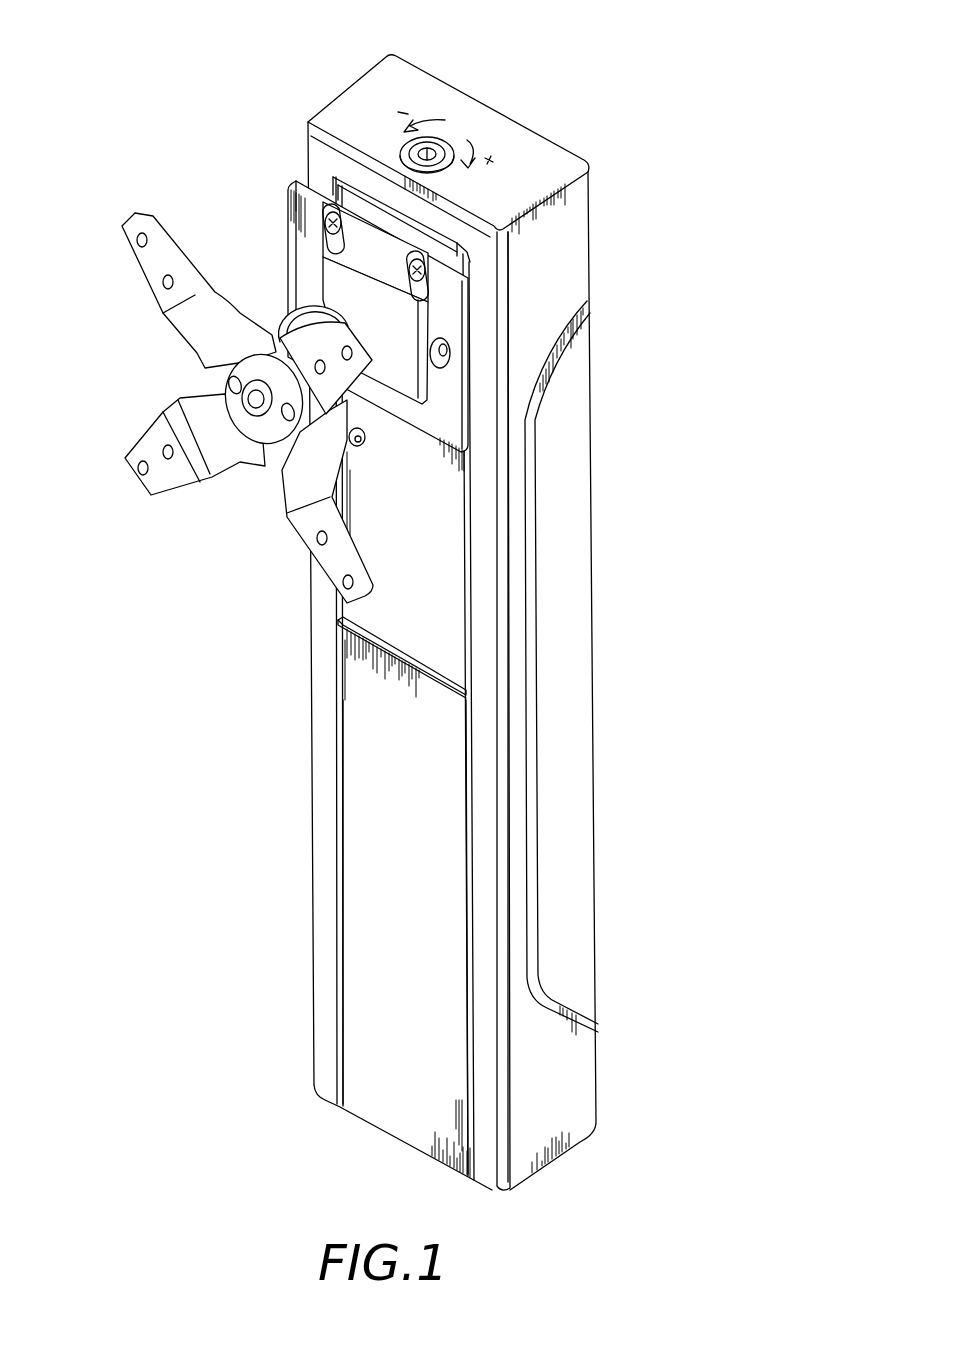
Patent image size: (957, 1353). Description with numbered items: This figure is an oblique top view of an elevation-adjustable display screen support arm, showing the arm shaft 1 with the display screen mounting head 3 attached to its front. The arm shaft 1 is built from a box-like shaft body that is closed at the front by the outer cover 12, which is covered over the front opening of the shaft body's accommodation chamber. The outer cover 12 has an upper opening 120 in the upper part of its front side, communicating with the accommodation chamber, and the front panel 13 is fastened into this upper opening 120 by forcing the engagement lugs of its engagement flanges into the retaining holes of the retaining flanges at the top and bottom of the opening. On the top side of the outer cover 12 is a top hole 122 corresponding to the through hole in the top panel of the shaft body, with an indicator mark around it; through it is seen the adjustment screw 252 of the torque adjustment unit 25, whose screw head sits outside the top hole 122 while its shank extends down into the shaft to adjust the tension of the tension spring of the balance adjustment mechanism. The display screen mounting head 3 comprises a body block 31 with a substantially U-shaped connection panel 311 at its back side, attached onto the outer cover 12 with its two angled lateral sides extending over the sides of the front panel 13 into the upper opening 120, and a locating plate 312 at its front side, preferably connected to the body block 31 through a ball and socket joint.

The arm shaft 1 is at (278, 825).
The outer cover 12 is at (372, 782).
The front panel 13 is at (400, 630).
The upper opening 120 is at (340, 606).
The top hole 122 is at (447, 150).
The torque adjustment unit 25 is at (208, 92).
The adjustment screw 252 is at (410, 150).
The display screen mounting head 3 is at (104, 233).
The body block 31 is at (335, 285).
The connection panel 311 is at (342, 195).
The locating plate 312 is at (150, 447).